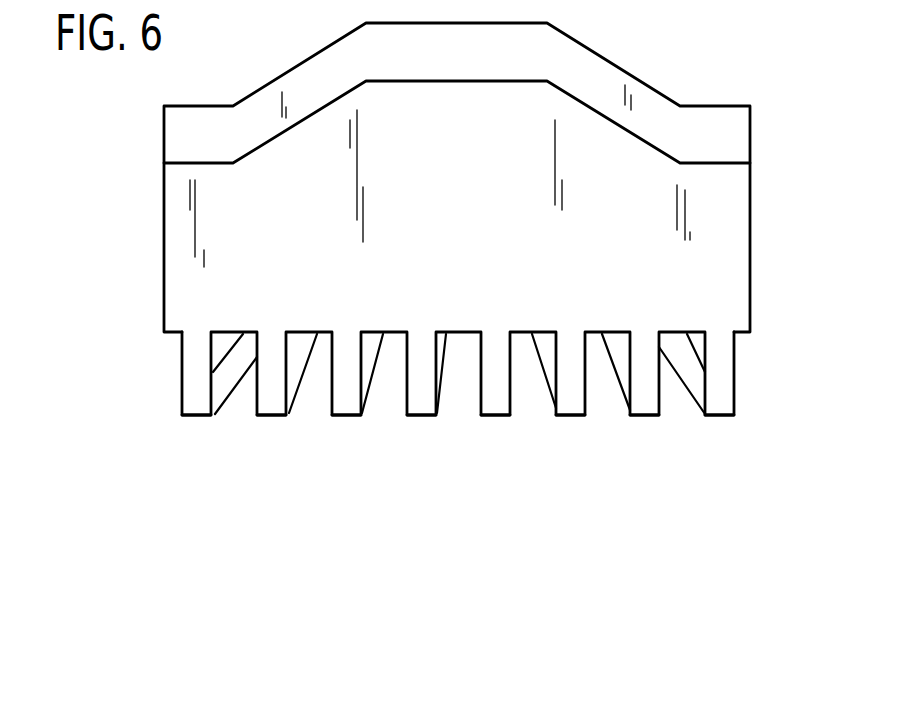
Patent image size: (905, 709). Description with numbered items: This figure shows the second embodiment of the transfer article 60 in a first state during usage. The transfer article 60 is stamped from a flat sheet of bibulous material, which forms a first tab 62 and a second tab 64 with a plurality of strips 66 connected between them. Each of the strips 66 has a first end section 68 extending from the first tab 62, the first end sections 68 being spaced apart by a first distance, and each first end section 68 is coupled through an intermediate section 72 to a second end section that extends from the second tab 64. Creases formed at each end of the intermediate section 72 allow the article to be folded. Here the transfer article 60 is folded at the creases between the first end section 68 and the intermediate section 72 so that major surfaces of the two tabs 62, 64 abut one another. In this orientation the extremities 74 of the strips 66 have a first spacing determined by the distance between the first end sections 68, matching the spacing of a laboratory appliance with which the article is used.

The transfer article 60 is at (140, 127).
The first tab 62 is at (476, 217).
The second tab 64 is at (476, 67).
The strips 66 is at (256, 384).
The first end section 68 is at (347, 348).
The intermediate section 72 is at (293, 377).
The extremities 74 is at (267, 416).